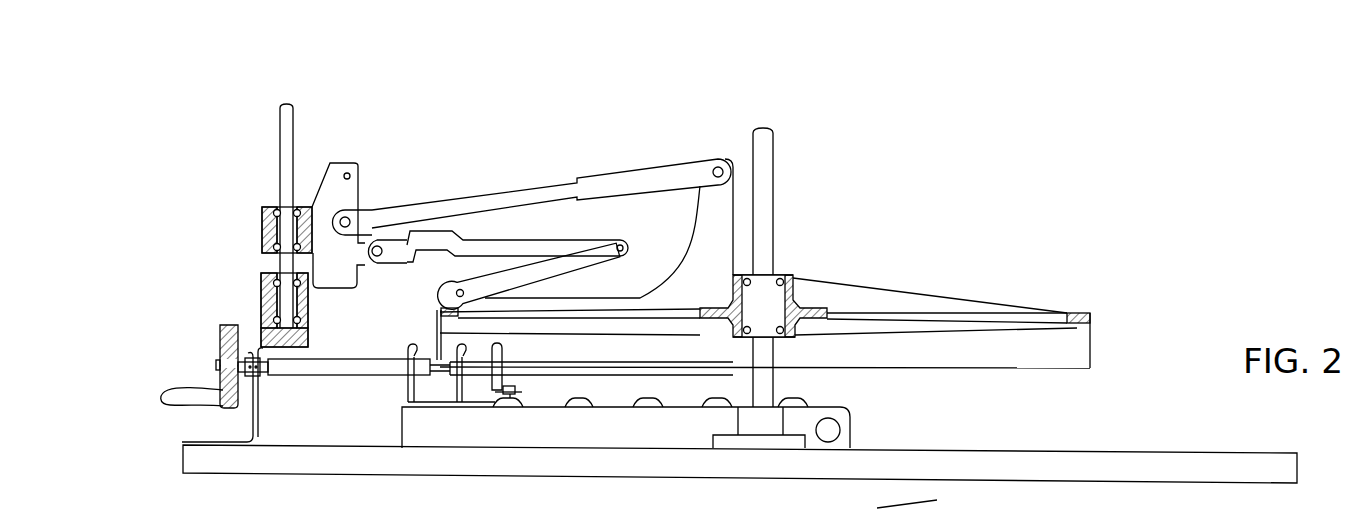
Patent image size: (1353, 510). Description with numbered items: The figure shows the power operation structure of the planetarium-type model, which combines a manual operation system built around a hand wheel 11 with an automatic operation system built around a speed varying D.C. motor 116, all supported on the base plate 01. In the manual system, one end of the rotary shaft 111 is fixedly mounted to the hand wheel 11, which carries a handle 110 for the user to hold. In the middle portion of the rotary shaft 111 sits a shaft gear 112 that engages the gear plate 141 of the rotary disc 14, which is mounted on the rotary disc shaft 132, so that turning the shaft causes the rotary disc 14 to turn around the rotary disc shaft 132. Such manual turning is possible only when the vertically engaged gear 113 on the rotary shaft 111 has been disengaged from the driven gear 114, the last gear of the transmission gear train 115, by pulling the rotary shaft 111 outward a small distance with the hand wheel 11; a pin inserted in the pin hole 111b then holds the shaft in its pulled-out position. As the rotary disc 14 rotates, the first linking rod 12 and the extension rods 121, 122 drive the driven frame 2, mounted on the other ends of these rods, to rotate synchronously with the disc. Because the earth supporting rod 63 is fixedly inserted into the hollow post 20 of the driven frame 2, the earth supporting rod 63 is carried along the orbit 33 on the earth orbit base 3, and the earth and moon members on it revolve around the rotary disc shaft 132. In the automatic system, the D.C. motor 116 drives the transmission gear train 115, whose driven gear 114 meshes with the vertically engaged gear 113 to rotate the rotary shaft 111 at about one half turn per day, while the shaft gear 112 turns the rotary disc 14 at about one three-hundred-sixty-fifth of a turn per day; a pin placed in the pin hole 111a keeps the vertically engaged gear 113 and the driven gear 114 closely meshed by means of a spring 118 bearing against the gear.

The base plate 01 is at (810, 463).
The driven frame 2 is at (353, 162).
The earth orbit base 3 is at (262, 308).
The hand wheel 11 is at (222, 330).
The first linking rod 12 is at (637, 178).
The rotary disc 14 is at (888, 298).
The hollow post 20 is at (263, 222).
The orbit 33 is at (272, 283).
The earth supporting rod 63 is at (283, 150).
The handle 110 is at (182, 395).
The rotary shaft 111 is at (347, 370).
The pin hole 111a is at (247, 378).
The pin hole 111b is at (260, 376).
The shaft gear 112 is at (447, 368).
The vertically engaged gear 113 is at (510, 337).
The driven gear 114 is at (515, 392).
The transmission gear train 115 is at (595, 438).
The speed varying D.C. motor 116 is at (840, 428).
The spring 118 is at (478, 340).
The extension rod 121 is at (608, 240).
The extension rod 122 is at (566, 265).
The rotary disc shaft 132 is at (770, 183).
The gear plate 141 is at (435, 335).